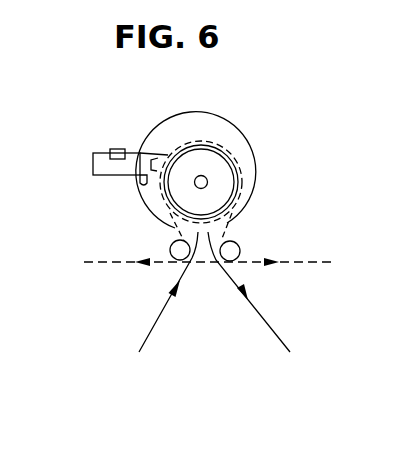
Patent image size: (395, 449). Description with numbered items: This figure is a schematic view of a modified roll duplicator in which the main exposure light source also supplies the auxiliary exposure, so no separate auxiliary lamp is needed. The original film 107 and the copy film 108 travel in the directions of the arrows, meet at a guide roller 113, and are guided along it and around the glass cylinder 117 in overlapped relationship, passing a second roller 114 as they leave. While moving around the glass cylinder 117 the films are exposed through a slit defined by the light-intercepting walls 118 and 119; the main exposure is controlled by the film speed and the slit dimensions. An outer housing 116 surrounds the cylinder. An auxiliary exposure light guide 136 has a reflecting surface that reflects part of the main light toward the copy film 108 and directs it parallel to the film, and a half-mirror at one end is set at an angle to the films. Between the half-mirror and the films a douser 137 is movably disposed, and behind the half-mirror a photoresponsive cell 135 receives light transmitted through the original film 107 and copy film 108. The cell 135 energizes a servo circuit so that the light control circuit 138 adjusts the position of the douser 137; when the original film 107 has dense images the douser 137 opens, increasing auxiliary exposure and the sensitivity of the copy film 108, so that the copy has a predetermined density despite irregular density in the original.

The original film 107 is at (163, 305).
The copy film 108 is at (90, 261).
The guide roller 113 is at (169, 249).
The roller 114 is at (238, 247).
The housing 116 is at (204, 121).
The glass cylinder 117 is at (218, 143).
The light-intercepting wall 118 is at (223, 155).
The light-intercepting wall 119 is at (238, 184).
The photoresponsive cell 135 is at (142, 186).
The auxiliary exposure light guide 136 is at (147, 155).
The douser 137 is at (149, 154).
The light control circuit 138 is at (114, 150).